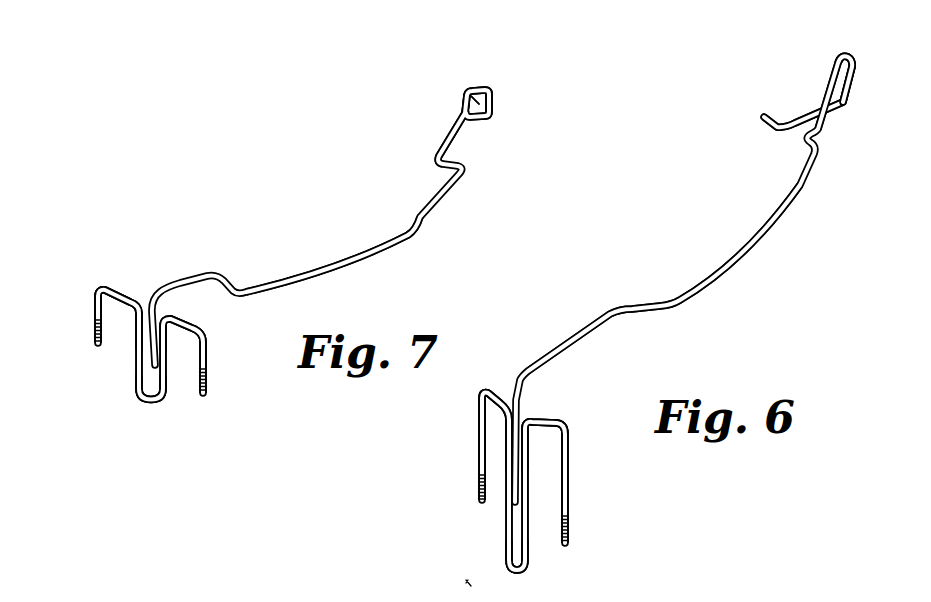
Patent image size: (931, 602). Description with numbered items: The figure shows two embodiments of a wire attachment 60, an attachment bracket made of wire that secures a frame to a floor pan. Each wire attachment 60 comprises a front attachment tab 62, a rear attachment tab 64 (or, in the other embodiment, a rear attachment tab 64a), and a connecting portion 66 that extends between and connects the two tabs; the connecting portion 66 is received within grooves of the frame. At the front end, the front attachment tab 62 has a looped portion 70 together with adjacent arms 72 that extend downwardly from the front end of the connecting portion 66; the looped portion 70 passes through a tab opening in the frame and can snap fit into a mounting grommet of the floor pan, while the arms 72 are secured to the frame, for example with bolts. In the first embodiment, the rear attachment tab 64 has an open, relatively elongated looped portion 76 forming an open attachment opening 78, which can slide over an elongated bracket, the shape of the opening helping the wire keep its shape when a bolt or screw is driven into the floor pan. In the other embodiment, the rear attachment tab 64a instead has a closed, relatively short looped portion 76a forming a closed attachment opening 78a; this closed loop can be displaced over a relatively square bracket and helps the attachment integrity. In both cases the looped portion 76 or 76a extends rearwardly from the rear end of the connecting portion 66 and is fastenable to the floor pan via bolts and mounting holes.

In FIG. 7, the wire attachment 60 is at (359, 246).
In FIG. 6, the wire attachment 60 is at (672, 294).
In FIG. 7, the front attachment tab 62 is at (133, 400).
In FIG. 6, the front attachment tab 62 is at (478, 567).
In FIG. 6, the rear attachment tab 64 is at (809, 85).
In FIG. 7, the rear attachment tab 64a is at (456, 97).
In FIG. 7, the connecting portion 66 is at (395, 256).
In FIG. 6, the connecting portion 66 is at (623, 317).
In FIG. 7, the looped portion 70 is at (152, 388).
In FIG. 6, the looped portion 70 is at (517, 553).
In FIG. 7, the arms 72 is at (95, 315).
In FIG. 6, the arms 72 is at (478, 450).
In FIG. 6, the looped portion 76 is at (851, 90).
In FIG. 7, the looped portion 76a is at (494, 105).
In FIG. 6, the open attachment opening 78 is at (830, 102).
In FIG. 7, the closed attachment opening 78a is at (471, 99).